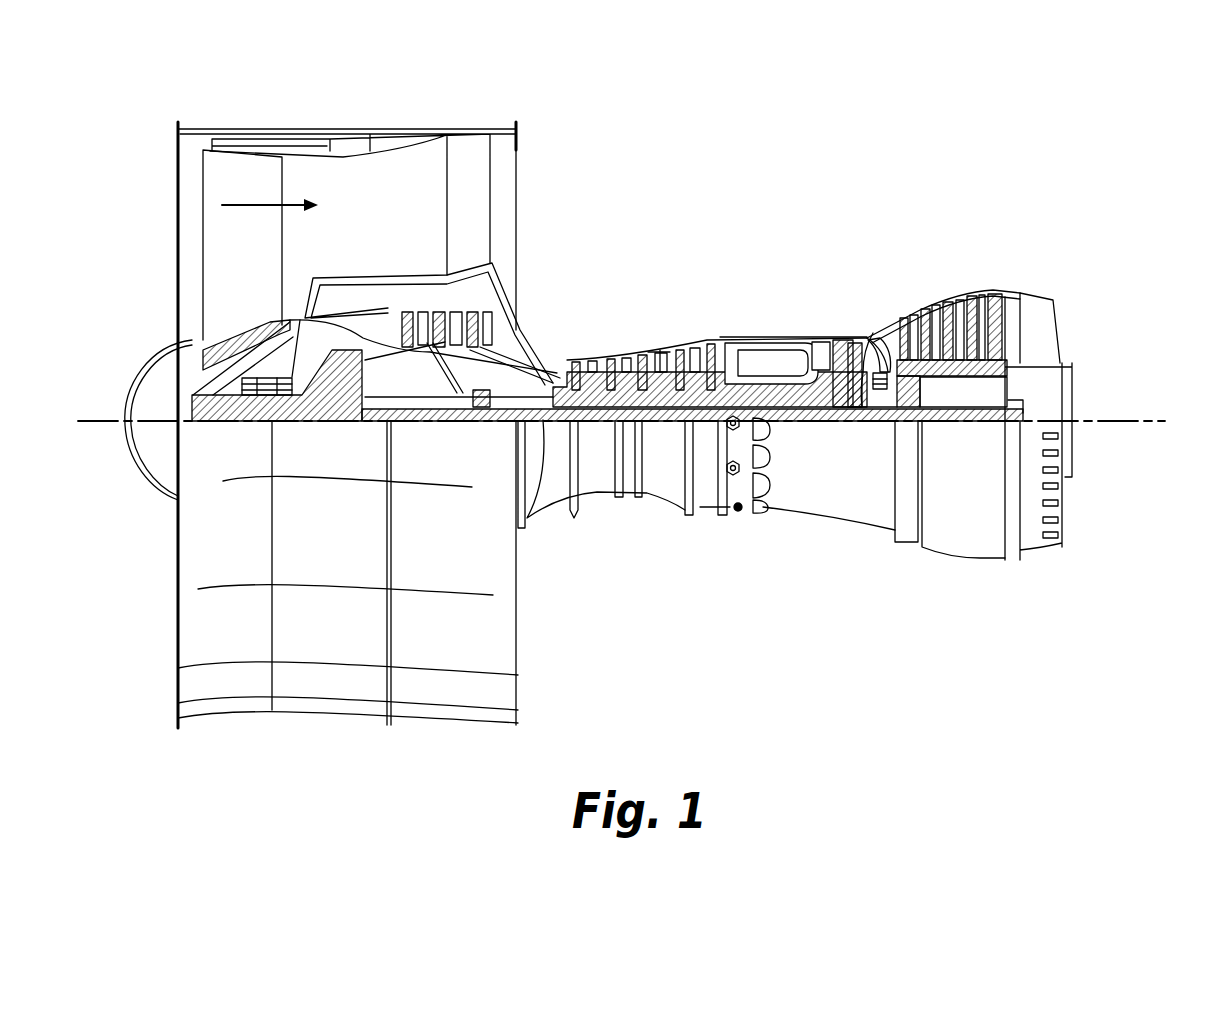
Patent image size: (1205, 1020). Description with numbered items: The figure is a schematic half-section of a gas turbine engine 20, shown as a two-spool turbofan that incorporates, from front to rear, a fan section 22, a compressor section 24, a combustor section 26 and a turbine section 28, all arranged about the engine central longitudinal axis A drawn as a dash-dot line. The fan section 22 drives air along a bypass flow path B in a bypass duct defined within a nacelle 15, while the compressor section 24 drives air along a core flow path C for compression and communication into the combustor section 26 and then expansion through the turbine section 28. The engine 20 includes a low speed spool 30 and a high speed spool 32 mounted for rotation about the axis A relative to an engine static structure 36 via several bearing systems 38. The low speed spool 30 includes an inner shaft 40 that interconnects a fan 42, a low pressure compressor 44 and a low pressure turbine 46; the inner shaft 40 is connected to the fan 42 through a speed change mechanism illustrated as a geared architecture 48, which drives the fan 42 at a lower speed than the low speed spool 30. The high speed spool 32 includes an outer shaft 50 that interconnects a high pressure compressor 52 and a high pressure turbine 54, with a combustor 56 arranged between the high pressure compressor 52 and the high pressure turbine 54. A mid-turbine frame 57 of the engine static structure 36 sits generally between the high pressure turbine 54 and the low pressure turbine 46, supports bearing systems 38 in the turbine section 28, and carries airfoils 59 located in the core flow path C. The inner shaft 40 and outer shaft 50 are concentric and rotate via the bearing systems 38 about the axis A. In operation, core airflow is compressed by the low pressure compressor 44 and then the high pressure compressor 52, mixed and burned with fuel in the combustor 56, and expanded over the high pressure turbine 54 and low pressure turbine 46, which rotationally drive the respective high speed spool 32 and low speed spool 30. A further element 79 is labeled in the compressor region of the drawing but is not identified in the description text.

The nacelle 15 is at (348, 132).
The gas turbine engine 20 is at (786, 180).
The fan section 22 is at (282, 115).
The compressor section 24 is at (568, 324).
The combustor section 26 is at (774, 308).
The turbine section 28 is at (915, 265).
The low speed spool 30 is at (665, 432).
The high speed spool 32 is at (708, 360).
The engine static structure 36 is at (704, 520).
The bearing systems 38 is at (477, 410).
The inner shaft 40 is at (540, 505).
The fan 42 is at (256, 263).
The low pressure compressor 44 is at (443, 325).
The low pressure turbine 46 is at (953, 297).
The geared architecture 48 is at (350, 405).
The outer shaft 50 is at (784, 420).
The high pressure compressor 52 is at (637, 353).
The high pressure turbine 54 is at (828, 352).
The combustor 56 is at (777, 356).
The mid-turbine frame 57 is at (878, 320).
The airfoils 59 is at (886, 356).
The compressor stage 79 is at (655, 375).
The engine central longitudinal axis A is at (1150, 421).
The bypass flow path B is at (255, 205).
The core flow path C is at (345, 315).